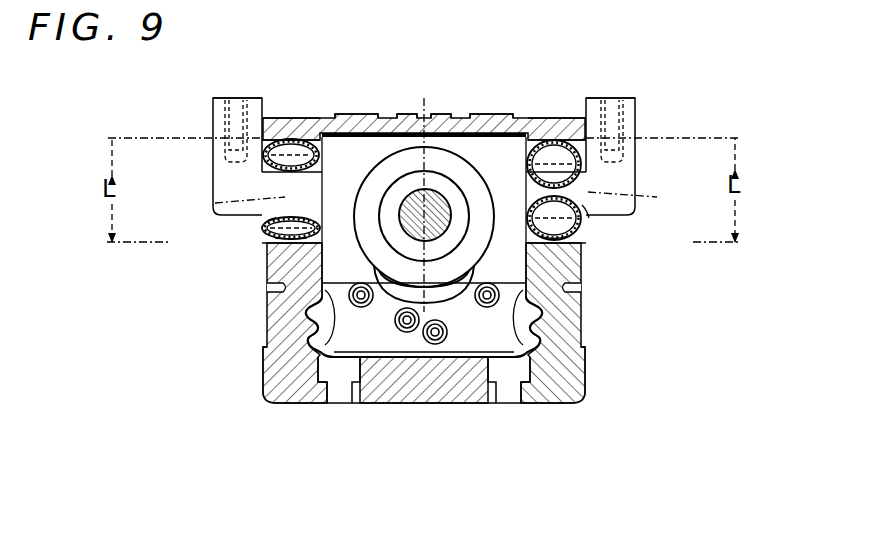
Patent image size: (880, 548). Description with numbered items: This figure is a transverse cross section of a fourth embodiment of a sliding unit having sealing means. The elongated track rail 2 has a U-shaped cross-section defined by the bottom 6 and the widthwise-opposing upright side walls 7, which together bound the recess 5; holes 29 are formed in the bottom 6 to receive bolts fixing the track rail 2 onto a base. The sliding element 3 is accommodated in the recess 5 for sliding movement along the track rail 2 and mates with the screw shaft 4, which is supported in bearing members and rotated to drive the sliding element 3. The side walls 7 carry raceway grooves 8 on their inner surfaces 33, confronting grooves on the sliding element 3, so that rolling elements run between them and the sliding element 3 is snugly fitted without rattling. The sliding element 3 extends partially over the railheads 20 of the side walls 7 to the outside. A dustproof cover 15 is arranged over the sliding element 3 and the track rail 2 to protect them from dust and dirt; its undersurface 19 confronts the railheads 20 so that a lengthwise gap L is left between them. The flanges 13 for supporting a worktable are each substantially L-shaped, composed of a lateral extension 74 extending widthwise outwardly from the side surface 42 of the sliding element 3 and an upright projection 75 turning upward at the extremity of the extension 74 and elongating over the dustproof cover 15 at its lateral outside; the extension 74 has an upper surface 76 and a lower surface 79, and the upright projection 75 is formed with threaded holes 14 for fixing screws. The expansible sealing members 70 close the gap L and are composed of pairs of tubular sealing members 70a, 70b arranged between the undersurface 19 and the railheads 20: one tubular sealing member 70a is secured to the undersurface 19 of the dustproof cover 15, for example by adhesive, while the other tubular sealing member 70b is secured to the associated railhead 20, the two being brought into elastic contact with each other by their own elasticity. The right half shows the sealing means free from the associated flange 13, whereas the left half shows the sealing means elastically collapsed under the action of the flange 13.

The track rail 2 is at (589, 406).
The sliding element 3 is at (479, 153).
The screw shaft 4 is at (410, 200).
The U-shaped recess 5 is at (463, 343).
The bottom 6 is at (393, 377).
The side walls 7 is at (287, 311).
The raceway grooves 8 is at (265, 357).
The flanges 13 is at (211, 171).
The threaded holes 14 is at (236, 100).
The dustproof cover 15 is at (440, 116).
The undersurface 19 is at (272, 120).
The railheads 20 is at (262, 248).
The holes 29 is at (338, 397).
The inner surfaces 33 is at (277, 398).
The side surface 42 is at (267, 306).
The expansible sealing members 70 is at (262, 234).
The tubular sealing member 70a is at (262, 240).
The tubular sealing member 70b is at (285, 139).
The lateral extension 74 is at (216, 203).
The upright projection 75 is at (220, 127).
The upper surface 76 is at (257, 226).
The lower surface 79 is at (330, 117).